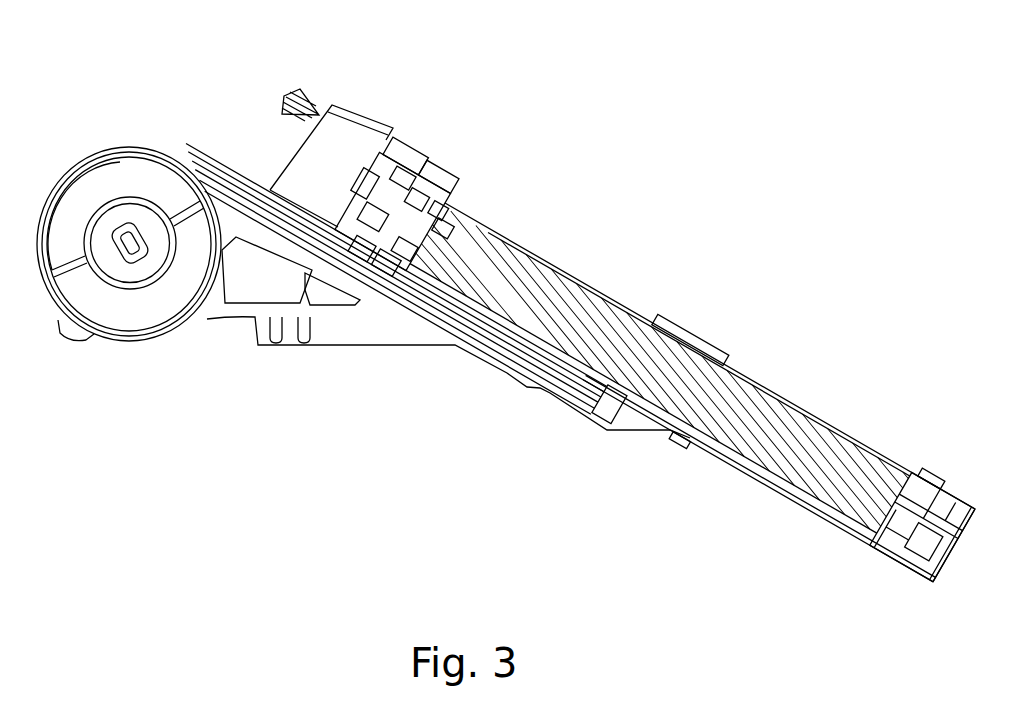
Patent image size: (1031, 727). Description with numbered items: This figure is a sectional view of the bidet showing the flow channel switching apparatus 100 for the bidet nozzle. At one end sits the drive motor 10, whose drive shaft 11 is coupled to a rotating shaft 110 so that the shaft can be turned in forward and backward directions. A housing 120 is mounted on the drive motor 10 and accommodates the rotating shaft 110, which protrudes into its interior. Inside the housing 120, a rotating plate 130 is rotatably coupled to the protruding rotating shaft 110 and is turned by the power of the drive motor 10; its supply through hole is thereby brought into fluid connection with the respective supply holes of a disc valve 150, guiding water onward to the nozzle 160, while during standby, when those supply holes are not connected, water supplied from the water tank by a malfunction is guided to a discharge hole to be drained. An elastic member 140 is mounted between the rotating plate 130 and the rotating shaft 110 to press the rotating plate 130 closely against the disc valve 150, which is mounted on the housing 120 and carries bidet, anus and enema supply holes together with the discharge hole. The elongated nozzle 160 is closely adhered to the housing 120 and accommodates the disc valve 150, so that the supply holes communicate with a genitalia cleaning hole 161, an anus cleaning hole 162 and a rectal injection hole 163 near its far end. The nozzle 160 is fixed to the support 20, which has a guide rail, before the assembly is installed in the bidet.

The drive motor 10 is at (322, 137).
The drive shaft 11 is at (375, 203).
The support 20 is at (557, 376).
The flow channel switching apparatus 100 is at (663, 219).
The rotating shaft 110 is at (433, 173).
The housing 120 is at (407, 150).
The rotating plate 130 is at (447, 207).
The elastic member 140 is at (387, 265).
The disc valve 150 is at (404, 252).
The nozzle 160 is at (818, 421).
The genitalia cleaning hole 161 is at (922, 480).
The anus cleaning hole 162 is at (947, 494).
The rectal injection hole 163 is at (957, 504).